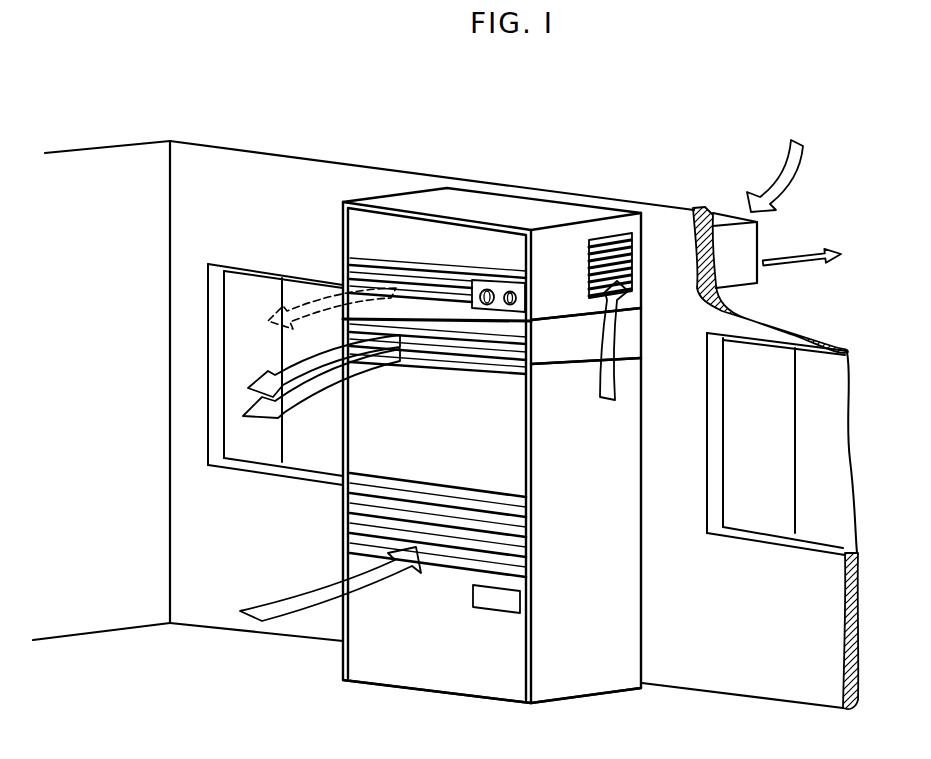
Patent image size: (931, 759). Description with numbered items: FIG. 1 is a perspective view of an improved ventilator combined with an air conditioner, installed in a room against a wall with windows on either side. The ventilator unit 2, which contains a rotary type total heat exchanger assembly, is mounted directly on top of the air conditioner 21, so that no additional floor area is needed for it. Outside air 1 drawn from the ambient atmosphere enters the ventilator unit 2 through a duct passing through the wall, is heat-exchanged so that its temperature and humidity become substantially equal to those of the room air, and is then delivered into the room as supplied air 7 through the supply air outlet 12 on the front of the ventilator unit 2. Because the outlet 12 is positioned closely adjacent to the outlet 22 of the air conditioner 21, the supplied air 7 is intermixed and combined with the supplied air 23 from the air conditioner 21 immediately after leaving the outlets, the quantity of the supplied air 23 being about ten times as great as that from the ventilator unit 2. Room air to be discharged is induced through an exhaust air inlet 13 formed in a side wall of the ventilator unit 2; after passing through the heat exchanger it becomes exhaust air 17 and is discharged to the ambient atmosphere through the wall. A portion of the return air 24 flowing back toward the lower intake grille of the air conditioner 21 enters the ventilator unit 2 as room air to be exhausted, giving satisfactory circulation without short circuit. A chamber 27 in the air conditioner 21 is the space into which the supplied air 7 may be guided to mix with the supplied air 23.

The outside air 1 is at (790, 165).
The ventilator unit 2 is at (558, 213).
The supplied air 7 is at (275, 312).
The supply air outlet 12 is at (419, 275).
The exhaust air inlet 13 is at (642, 392).
The exhaust air 17 is at (810, 264).
The air conditioner 21 is at (606, 683).
The outlet of the air conditioner 22 is at (458, 318).
The supplied air from the air conditioner 23 is at (250, 403).
The return air 24 is at (262, 620).
The chamber 27 is at (641, 331).